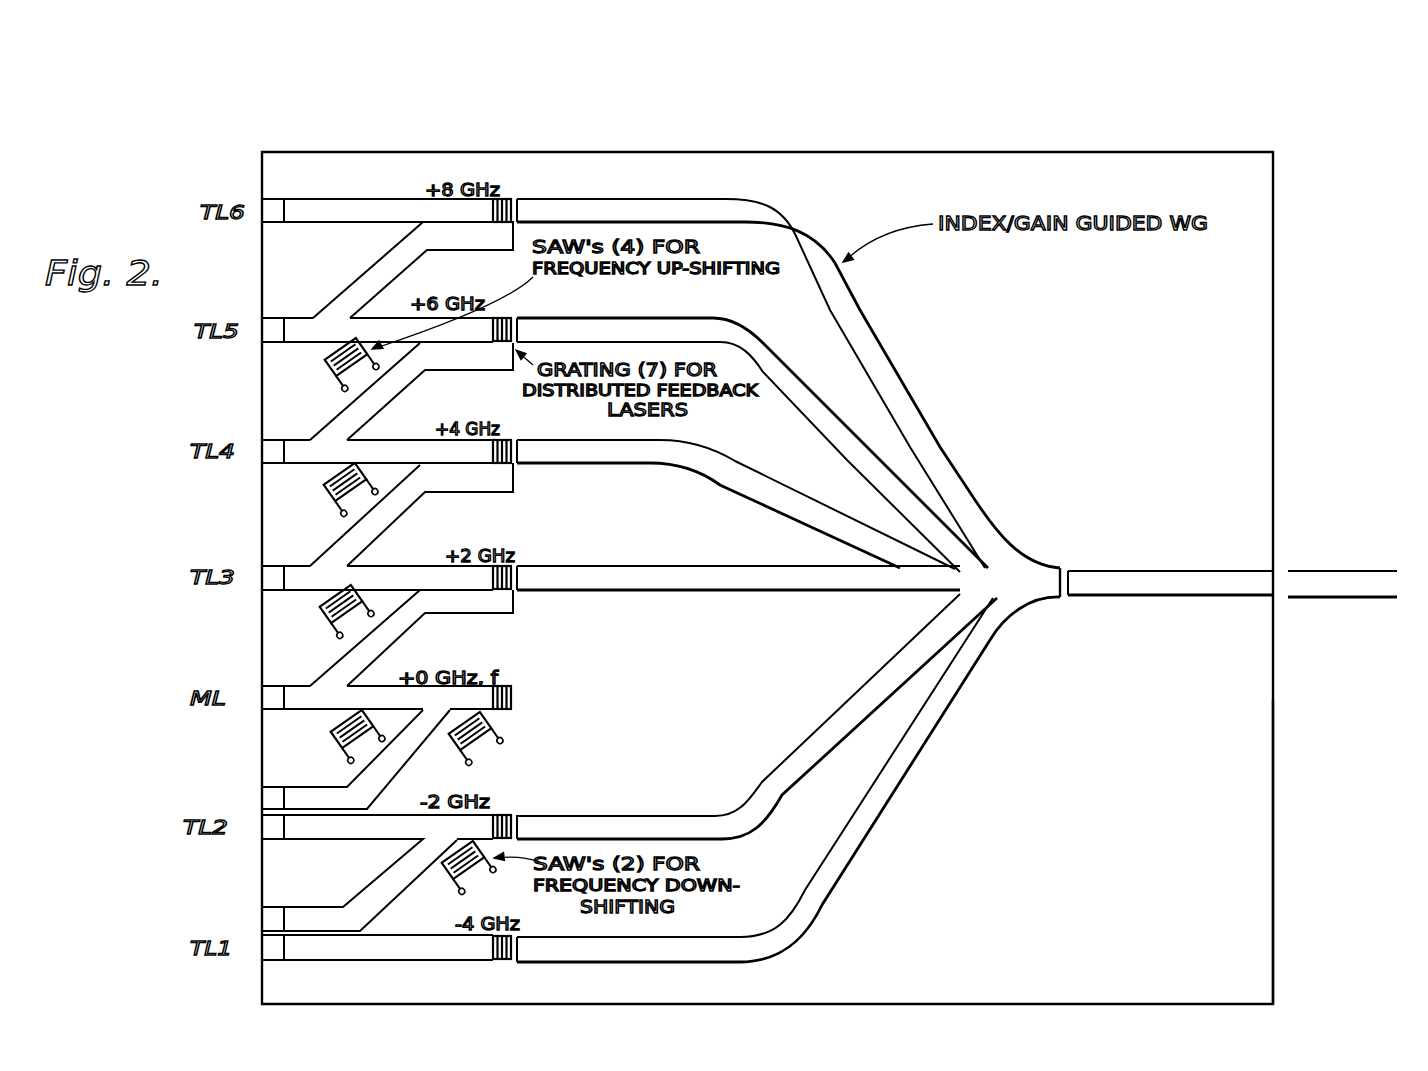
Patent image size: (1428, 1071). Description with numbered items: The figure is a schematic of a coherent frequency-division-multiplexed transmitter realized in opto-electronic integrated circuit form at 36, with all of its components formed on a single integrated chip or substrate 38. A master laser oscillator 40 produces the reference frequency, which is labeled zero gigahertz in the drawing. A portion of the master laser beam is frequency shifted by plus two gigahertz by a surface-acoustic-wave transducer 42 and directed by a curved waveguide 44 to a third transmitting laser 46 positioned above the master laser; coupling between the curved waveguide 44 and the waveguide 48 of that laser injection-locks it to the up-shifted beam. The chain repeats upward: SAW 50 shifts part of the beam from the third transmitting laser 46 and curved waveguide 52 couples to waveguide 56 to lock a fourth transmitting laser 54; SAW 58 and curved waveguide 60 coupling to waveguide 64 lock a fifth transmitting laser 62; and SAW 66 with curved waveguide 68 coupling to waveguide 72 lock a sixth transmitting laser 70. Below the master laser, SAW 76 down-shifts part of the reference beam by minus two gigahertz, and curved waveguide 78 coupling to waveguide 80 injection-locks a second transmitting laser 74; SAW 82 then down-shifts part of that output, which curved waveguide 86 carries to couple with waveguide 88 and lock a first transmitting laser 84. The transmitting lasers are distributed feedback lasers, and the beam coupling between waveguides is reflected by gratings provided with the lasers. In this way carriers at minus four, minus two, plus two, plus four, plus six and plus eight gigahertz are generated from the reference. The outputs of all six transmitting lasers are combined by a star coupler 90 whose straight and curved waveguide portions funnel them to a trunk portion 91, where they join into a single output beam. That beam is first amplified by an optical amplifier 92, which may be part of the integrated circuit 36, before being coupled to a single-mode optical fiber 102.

The coherent FDM transmitter in OEIC form 36 is at (1283, 308).
The integrated chip or substrate 38 is at (1137, 811).
The master laser oscillator 40 is at (277, 684).
The surface-acoustic-wave transducer 42 is at (330, 732).
The curved waveguide 44 is at (397, 636).
The third transmitting laser 46 is at (277, 564).
The waveguide of third transmitting laser 48 is at (385, 565).
The surface-acoustic-wave transducer 50 is at (317, 602).
The curved waveguide 52 is at (407, 507).
The fourth transmitting laser 54 is at (277, 438).
The waveguide of fourth transmitting laser 56 is at (385, 438).
The surface-acoustic-wave transducer 58 is at (330, 478).
The curved waveguide 60 is at (402, 381).
The fifth transmitting laser 62 is at (275, 308).
The waveguide of fifth transmitting laser 64 is at (385, 313).
The surface-acoustic-wave transducer 66 is at (322, 372).
The curved waveguide 68 is at (373, 265).
The sixth transmitting laser 70 is at (278, 193).
The waveguide of sixth transmitting laser 72 is at (363, 196).
The second transmitting laser 74 is at (274, 845).
The surface-acoustic-wave transducer 76 is at (485, 753).
The curved waveguide 78 is at (402, 768).
The waveguide of second transmitting laser 80 is at (373, 836).
The surface-acoustic-wave transducer 82 is at (470, 877).
The first transmitting laser 84 is at (270, 961).
The curved waveguide 86 is at (338, 896).
The waveguide of first transmitting laser 88 is at (413, 962).
The star coupler 90 is at (1005, 532).
The trunk portion 91 is at (1054, 566).
The optical amplifier 92 is at (1168, 597).
The single-mode optical fiber 102 is at (1352, 599).